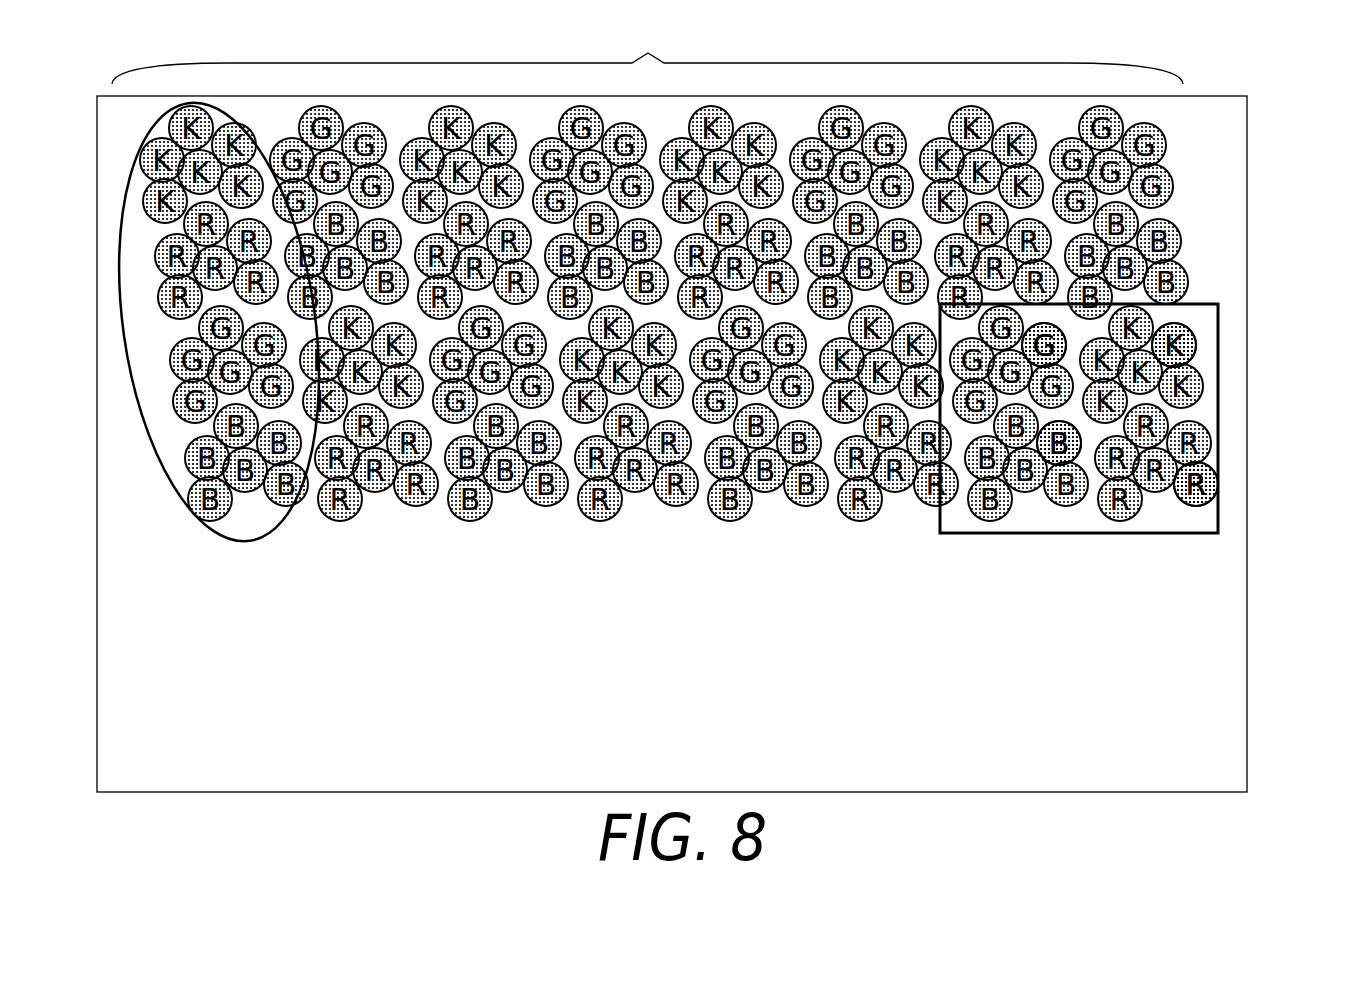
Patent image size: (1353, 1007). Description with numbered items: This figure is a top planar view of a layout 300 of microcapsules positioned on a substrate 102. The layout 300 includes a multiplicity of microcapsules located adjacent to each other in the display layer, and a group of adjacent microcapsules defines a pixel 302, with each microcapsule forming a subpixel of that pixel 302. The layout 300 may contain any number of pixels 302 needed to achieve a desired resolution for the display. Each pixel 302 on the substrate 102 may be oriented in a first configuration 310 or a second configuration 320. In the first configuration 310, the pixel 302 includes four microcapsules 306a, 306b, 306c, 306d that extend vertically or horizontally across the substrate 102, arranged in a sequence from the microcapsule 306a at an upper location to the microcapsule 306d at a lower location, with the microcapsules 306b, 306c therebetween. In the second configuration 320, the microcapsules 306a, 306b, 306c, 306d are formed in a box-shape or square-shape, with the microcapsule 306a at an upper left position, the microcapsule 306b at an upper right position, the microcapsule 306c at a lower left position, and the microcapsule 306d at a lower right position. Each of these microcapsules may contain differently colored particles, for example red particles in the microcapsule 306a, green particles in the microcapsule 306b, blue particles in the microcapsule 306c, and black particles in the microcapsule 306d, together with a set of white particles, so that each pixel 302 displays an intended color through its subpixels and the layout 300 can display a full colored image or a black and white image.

The substrate 102 is at (1248, 670).
The layout 300 is at (647, 53).
The pixel 302 is at (289, 535).
The microcapsule 306a is at (1060, 334).
The microcapsule 306b is at (1192, 335).
The microcapsule 306c is at (1077, 443).
The microcapsule 306d is at (1192, 507).
The first configuration 310 is at (234, 556).
The second configuration 320 is at (1063, 556).